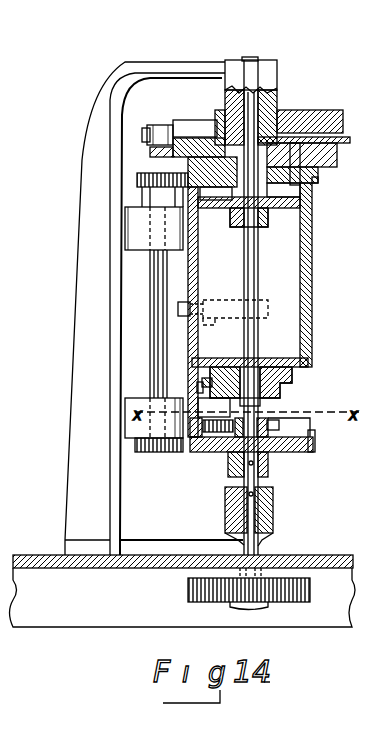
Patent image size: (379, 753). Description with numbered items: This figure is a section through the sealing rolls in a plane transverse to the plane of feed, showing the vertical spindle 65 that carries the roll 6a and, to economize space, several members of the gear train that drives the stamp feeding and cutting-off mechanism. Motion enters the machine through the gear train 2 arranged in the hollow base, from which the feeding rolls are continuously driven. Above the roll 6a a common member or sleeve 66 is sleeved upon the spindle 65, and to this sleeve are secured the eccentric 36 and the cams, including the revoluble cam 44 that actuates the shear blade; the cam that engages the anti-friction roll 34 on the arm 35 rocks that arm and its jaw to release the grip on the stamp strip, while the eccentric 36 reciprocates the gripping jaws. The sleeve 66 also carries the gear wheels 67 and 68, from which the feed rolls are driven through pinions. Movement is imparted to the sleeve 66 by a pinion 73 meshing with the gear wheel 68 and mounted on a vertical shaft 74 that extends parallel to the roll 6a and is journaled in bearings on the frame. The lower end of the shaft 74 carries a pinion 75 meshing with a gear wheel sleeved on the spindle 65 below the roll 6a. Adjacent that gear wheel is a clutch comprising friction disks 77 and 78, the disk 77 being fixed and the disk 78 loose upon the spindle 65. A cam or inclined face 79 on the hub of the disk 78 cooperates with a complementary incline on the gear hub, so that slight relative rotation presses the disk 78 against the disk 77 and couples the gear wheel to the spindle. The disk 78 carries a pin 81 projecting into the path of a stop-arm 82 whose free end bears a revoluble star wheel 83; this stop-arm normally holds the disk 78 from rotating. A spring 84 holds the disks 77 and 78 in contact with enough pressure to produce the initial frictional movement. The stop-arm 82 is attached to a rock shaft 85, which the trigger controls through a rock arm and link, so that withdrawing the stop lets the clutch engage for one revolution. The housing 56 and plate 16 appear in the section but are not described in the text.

The gear train 2 is at (190, 596).
The lower plate 16 is at (315, 443).
The anti-friction roll 34 is at (160, 127).
The arm 35 is at (194, 121).
The eccentric 36 is at (296, 112).
The revoluble cam 44 is at (160, 148).
The housing 56 is at (311, 244).
The roll 6a is at (327, 317).
The vertical spindle 65 is at (258, 482).
The sleeve 66 is at (314, 190).
The gear wheel 67 is at (317, 163).
The gear wheel 68 is at (318, 176).
The pinion 73 is at (136, 178).
The vertical shaft 74 is at (157, 298).
The pinion 75 is at (144, 452).
The friction disk 77 is at (308, 363).
The friction disk 78 is at (298, 376).
The cam or inclined face 79 is at (250, 403).
The pin or finger 81 is at (196, 389).
The stop-arm 82 is at (214, 407).
The star wheel 83 is at (200, 376).
The spring 84 is at (220, 433).
The rock shaft 85 is at (258, 302).